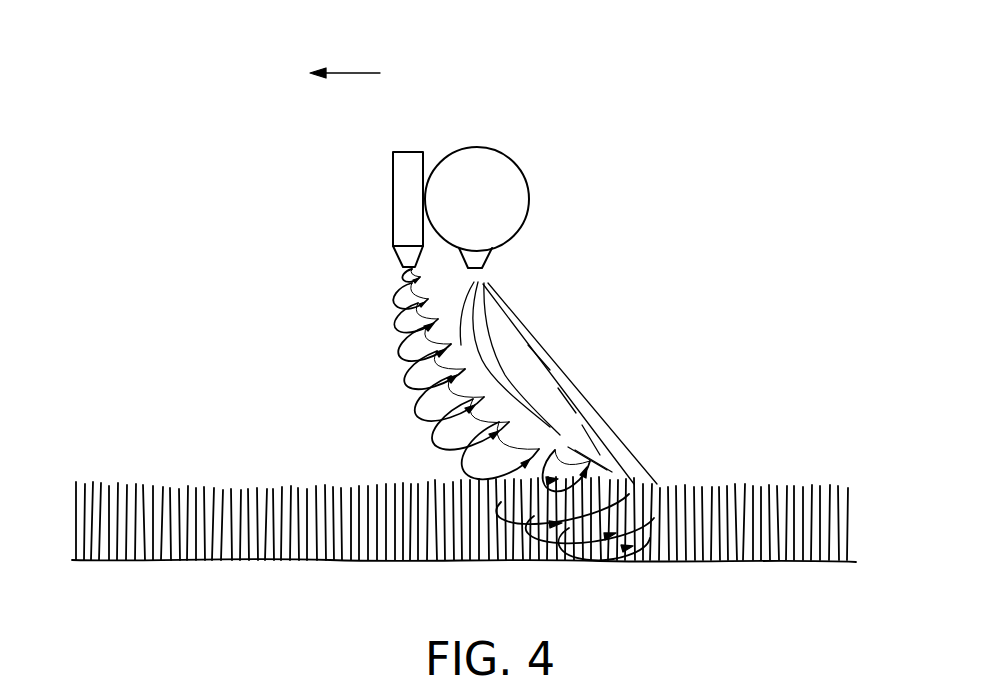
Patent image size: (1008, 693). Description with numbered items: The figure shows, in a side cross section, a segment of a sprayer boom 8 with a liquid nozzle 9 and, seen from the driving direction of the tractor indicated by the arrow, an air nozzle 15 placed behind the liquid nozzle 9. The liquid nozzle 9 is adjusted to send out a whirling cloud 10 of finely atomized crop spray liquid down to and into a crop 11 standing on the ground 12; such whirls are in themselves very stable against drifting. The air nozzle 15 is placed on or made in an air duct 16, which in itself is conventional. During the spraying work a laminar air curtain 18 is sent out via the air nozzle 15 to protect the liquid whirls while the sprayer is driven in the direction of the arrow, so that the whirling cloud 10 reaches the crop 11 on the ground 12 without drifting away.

The sprayer boom 8 is at (393, 157).
The liquid nozzle 9 is at (393, 258).
The whirling cloud 10 is at (413, 405).
The crop 11 is at (820, 503).
The ground 12 is at (737, 562).
The air nozzle 15 is at (489, 261).
The air duct 16 is at (495, 172).
The laminar air curtain 18 is at (588, 402).